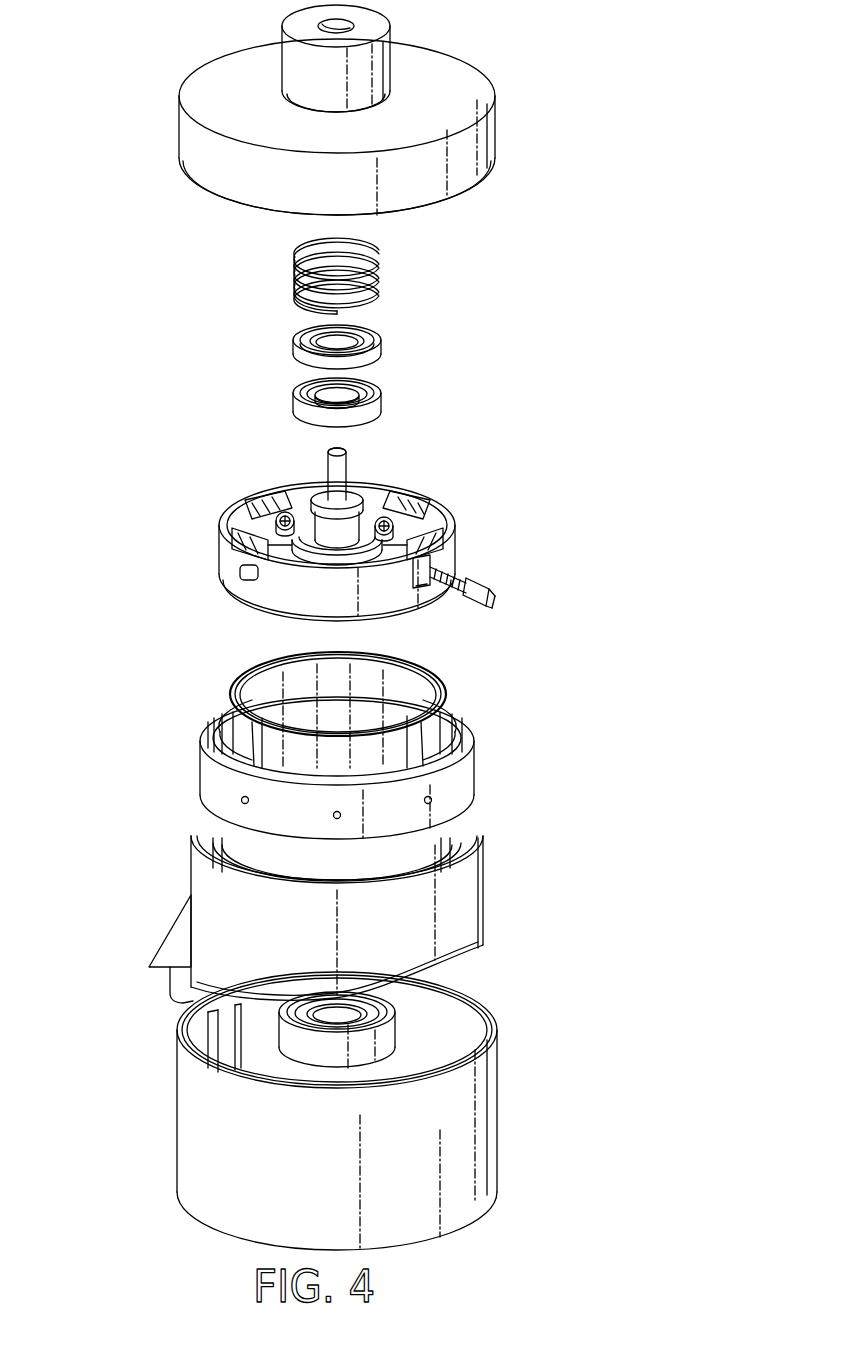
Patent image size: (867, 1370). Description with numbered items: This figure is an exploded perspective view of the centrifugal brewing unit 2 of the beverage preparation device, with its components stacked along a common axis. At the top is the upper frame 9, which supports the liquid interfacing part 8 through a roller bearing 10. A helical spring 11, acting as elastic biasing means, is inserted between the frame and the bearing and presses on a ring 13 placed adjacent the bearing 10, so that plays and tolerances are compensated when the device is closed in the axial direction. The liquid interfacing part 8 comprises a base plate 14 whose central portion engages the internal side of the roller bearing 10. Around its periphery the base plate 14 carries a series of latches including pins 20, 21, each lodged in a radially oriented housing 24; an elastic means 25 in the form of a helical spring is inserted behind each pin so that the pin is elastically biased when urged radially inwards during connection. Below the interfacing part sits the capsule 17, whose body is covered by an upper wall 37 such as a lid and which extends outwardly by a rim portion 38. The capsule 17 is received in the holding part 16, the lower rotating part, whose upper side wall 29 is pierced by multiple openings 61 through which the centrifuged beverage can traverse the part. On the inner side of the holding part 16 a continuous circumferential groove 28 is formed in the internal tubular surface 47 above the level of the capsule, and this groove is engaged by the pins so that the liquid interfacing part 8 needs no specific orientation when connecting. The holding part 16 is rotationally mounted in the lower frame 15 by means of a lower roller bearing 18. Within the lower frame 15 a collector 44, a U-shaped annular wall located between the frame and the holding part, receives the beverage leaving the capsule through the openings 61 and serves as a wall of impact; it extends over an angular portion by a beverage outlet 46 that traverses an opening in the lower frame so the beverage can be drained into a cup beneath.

The centrifugal brewing unit 2 is at (313, 627).
The liquid interfacing part 8 is at (368, 538).
The upper frame 9 is at (492, 66).
The roller bearing 10 is at (382, 405).
The helical spring 11 is at (381, 285).
The ring 13 is at (382, 350).
The base plate 14 is at (280, 489).
The lower frame 15 is at (507, 1080).
The holding part 16 is at (371, 915).
The capsule 17 is at (353, 731).
The lower roller bearing 18 is at (325, 1058).
The pin 20 is at (488, 586).
The pin 21 is at (233, 586).
The housing 24 is at (432, 562).
The elastic means 25 is at (436, 592).
The groove 28 is at (222, 716).
The upper side wall 29 is at (475, 750).
The upper wall 37 is at (387, 680).
The rim portion 38 is at (258, 672).
The collector 44 is at (499, 897).
The beverage outlet 46 is at (218, 556).
The opening 47 is at (218, 742).
The openings 61 is at (434, 800).